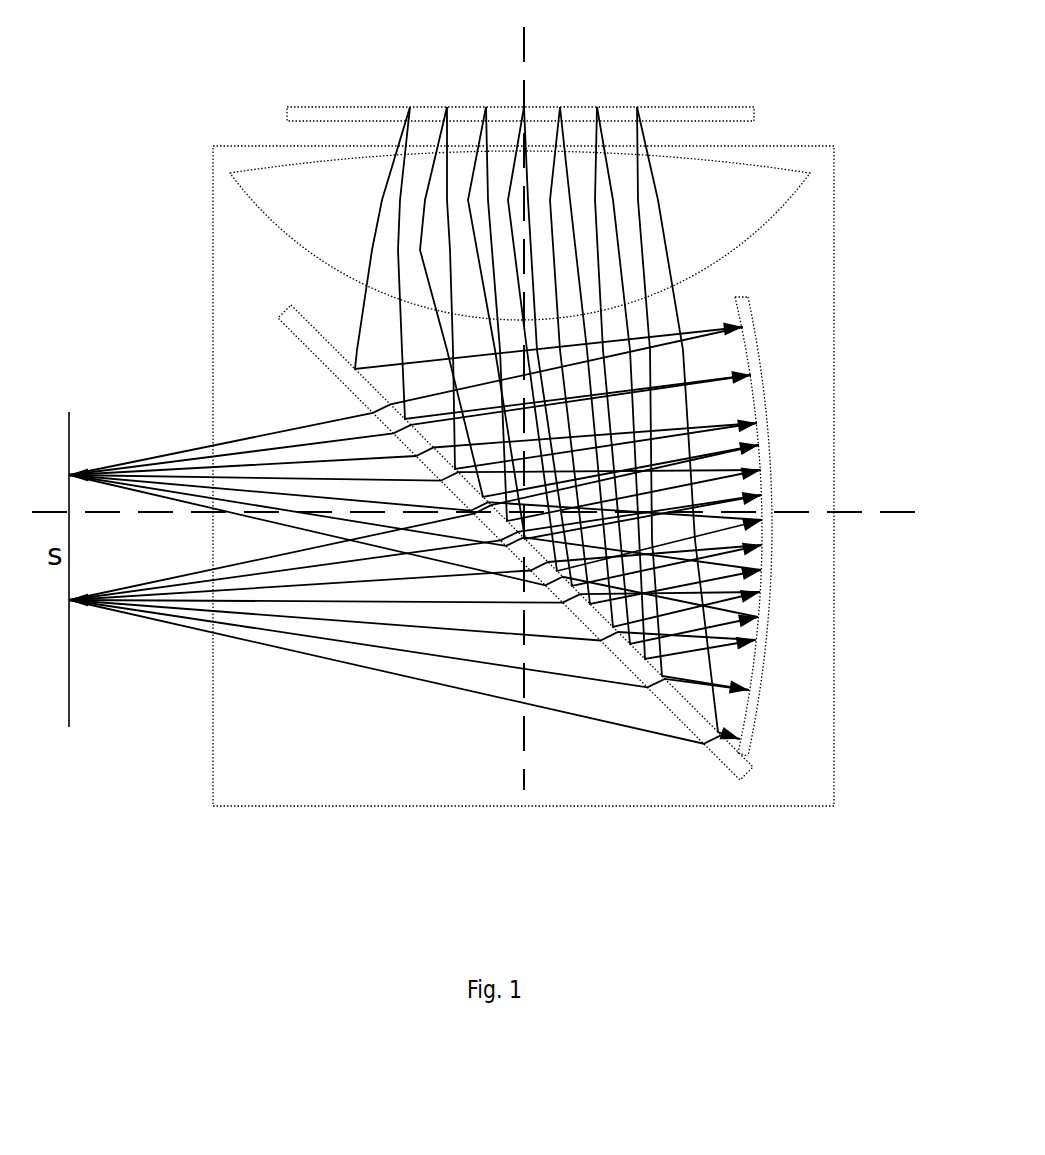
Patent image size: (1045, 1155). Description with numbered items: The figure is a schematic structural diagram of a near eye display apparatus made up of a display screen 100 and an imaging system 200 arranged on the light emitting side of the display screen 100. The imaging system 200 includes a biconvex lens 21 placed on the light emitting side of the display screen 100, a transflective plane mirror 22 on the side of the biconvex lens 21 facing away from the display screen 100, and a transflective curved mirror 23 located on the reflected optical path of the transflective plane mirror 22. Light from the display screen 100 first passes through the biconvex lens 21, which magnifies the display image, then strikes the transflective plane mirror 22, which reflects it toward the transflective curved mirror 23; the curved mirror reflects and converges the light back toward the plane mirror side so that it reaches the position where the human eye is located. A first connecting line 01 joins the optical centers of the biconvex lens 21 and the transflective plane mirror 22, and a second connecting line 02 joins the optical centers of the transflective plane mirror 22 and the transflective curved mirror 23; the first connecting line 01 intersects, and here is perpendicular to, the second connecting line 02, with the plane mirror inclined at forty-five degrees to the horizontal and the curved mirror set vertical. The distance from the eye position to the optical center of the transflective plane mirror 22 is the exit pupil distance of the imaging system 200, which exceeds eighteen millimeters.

The display screen 100 is at (560, 60).
The imaging system 200 is at (523, 529).
The biconvex lens 21 is at (577, 235).
The transflective plane mirror 22 is at (439, 542).
The transflective curved mirror 23 is at (830, 526).
The first connecting line 01 is at (574, 395).
The second connecting line 02 is at (490, 481).